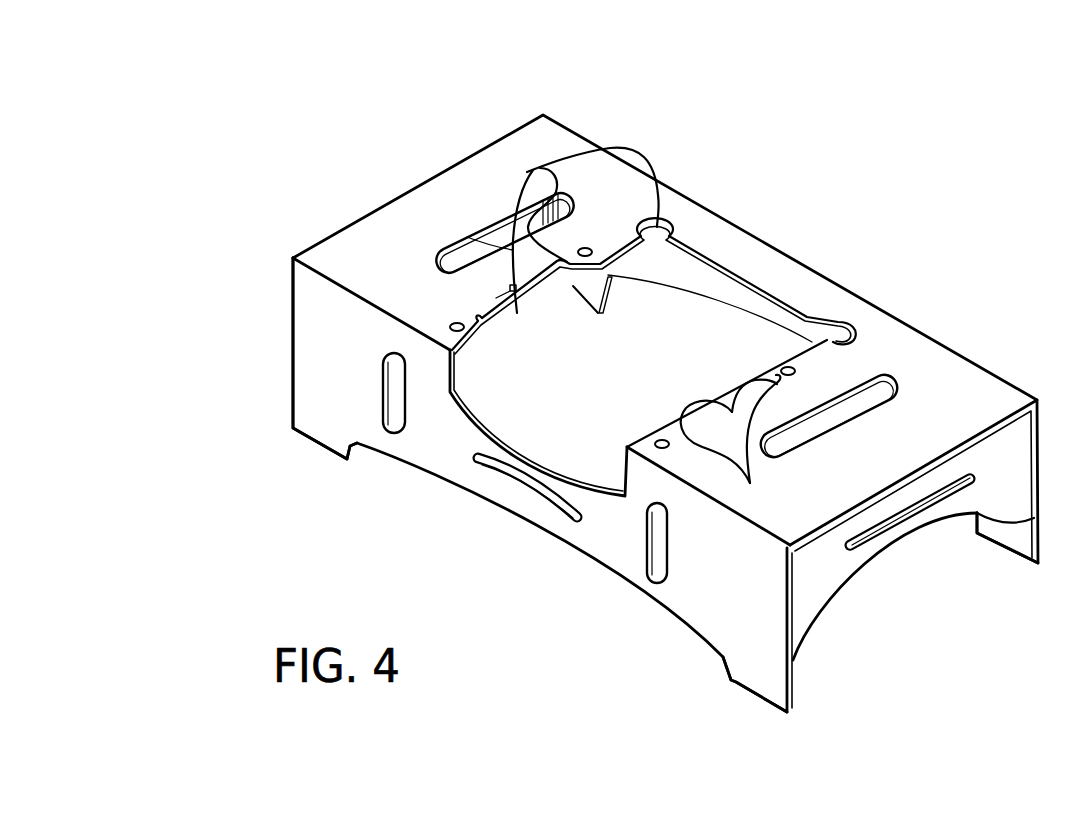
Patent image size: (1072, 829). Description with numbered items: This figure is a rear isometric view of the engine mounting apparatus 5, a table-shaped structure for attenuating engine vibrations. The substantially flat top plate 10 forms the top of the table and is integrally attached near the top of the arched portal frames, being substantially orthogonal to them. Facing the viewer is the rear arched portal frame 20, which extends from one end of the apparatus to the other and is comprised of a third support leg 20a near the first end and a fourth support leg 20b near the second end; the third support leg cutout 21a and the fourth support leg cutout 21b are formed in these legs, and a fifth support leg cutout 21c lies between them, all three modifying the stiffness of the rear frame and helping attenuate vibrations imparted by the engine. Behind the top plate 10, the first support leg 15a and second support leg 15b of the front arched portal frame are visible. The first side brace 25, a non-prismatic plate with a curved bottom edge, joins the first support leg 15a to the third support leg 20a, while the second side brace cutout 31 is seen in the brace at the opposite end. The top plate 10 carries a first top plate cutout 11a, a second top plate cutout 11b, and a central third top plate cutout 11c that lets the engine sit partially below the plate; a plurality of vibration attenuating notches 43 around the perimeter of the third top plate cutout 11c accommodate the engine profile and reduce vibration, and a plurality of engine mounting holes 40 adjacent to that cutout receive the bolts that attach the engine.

The engine mounting apparatus 5 is at (238, 122).
The top plate 10 is at (975, 400).
The first top plate cutout 11a is at (882, 397).
The second top plate cutout 11b is at (462, 262).
The third top plate cutout 11c is at (683, 317).
The first support leg 15a is at (1016, 540).
The second support leg 15b is at (573, 286).
The rear arched portal frame 20 is at (600, 548).
The third support leg 20a is at (755, 653).
The fourth support leg 20b is at (313, 357).
The third support leg cutout 21a is at (655, 566).
The fourth support leg cutout 21b is at (384, 433).
The fifth support leg cutout 21c is at (528, 492).
The first side brace 25 is at (835, 575).
The second side brace cutout 31 is at (912, 515).
The engine mounting holes 40 is at (452, 322).
The vibration attenuating notches 43 is at (635, 329).